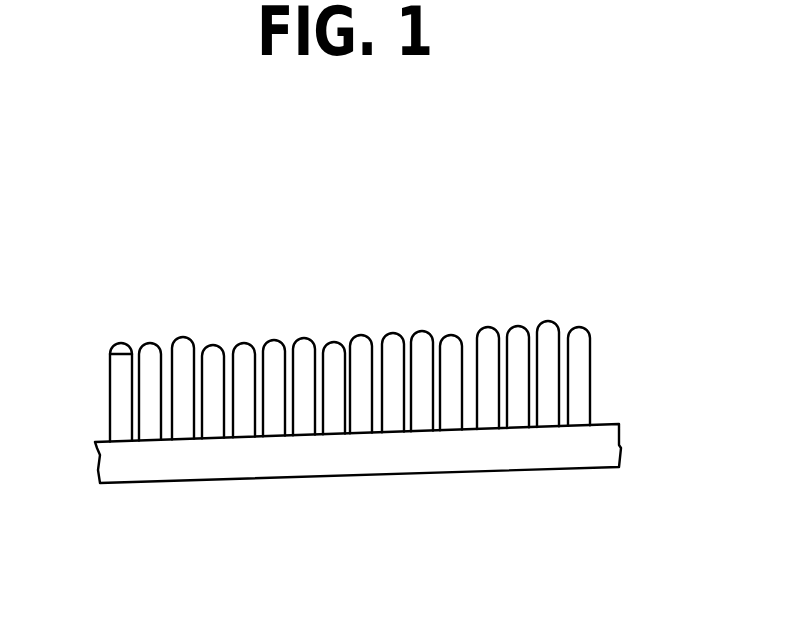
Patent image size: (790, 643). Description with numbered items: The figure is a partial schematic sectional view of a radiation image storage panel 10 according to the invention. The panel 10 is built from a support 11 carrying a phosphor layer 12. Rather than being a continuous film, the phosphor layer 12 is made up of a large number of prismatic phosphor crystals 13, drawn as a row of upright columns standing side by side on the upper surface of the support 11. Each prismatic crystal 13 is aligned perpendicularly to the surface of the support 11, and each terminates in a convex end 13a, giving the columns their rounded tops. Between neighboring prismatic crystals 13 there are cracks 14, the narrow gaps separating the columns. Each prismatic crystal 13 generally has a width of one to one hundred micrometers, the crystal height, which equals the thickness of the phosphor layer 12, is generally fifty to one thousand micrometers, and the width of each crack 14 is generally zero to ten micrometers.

The radiation image storage panel 10 is at (599, 305).
The support 11 is at (622, 447).
The phosphor layer 12 is at (638, 318).
The prismatic phosphor crystal 13 is at (110, 383).
The convex end 13a is at (118, 342).
The crack 14 is at (133, 352).